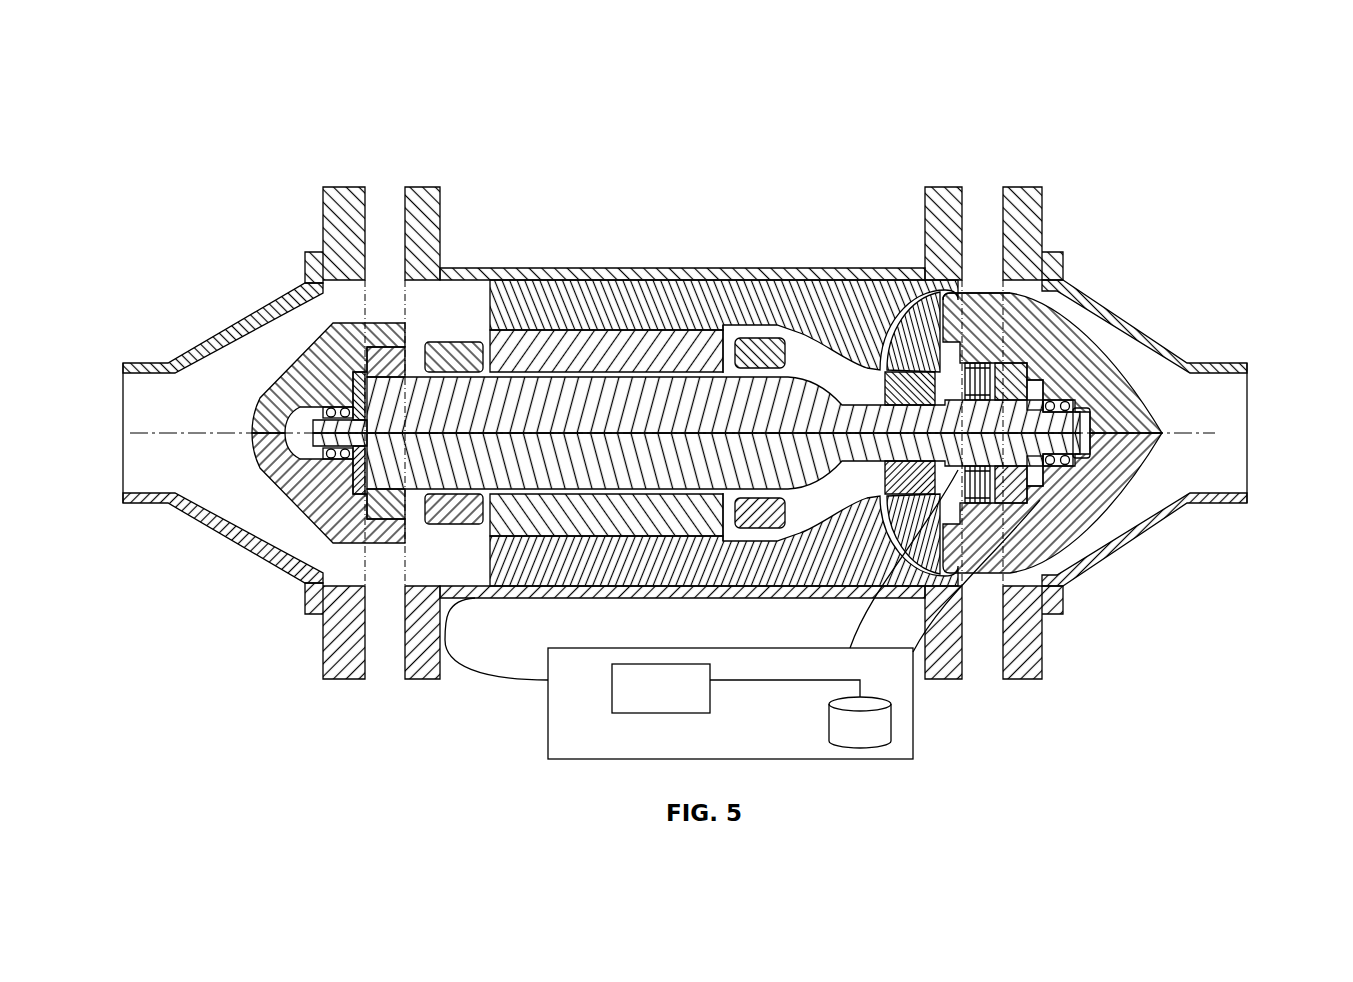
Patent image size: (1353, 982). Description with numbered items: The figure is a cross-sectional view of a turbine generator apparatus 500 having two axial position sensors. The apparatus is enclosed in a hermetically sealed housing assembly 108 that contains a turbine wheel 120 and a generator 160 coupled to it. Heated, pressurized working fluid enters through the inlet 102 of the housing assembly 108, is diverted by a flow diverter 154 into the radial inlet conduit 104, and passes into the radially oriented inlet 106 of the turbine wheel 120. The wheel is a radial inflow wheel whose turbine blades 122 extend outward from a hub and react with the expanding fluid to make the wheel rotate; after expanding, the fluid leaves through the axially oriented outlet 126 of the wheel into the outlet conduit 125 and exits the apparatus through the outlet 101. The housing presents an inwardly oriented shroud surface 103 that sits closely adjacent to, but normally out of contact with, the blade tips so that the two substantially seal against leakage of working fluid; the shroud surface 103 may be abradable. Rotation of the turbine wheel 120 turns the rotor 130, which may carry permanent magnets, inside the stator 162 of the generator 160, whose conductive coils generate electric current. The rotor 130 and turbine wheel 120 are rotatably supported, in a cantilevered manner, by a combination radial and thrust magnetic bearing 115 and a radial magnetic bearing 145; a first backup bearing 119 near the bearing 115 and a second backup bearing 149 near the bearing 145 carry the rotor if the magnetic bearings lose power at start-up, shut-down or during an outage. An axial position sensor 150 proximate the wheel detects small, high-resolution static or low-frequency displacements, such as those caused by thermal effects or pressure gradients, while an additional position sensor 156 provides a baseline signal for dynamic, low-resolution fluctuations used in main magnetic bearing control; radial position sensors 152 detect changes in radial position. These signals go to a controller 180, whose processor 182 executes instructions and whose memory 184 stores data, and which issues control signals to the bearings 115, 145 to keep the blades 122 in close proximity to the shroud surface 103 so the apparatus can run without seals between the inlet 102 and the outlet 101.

The turbine generator apparatus 500 is at (203, 92).
The outlet 101 is at (150, 397).
The inlet 102 is at (1225, 410).
The shroud surface 103 is at (890, 350).
The inlet conduit 104 is at (930, 345).
The radially oriented inlet 106 is at (945, 305).
The housing assembly 108 is at (668, 268).
The bearing 115 is at (1040, 470).
The first backup bearing 119 is at (1050, 358).
The turbine wheel 120 is at (884, 300).
The turbine blades 122 is at (895, 407).
The outlet conduit 125 is at (845, 381).
The axially oriented outlet 126 is at (873, 385).
The rotor 130 is at (610, 350).
The bearing 145 is at (385, 505).
The second backup bearing 149 is at (310, 355).
The axial position sensor 150 is at (1000, 345).
The radial position sensors 152 is at (353, 462).
The flow diverter 154 is at (1122, 380).
The position sensor 156 is at (1000, 362).
The generator 160 is at (453, 560).
The stator 162 is at (597, 388).
The controller 180 is at (617, 648).
The processor 182 is at (640, 700).
The memory 184 is at (840, 737).